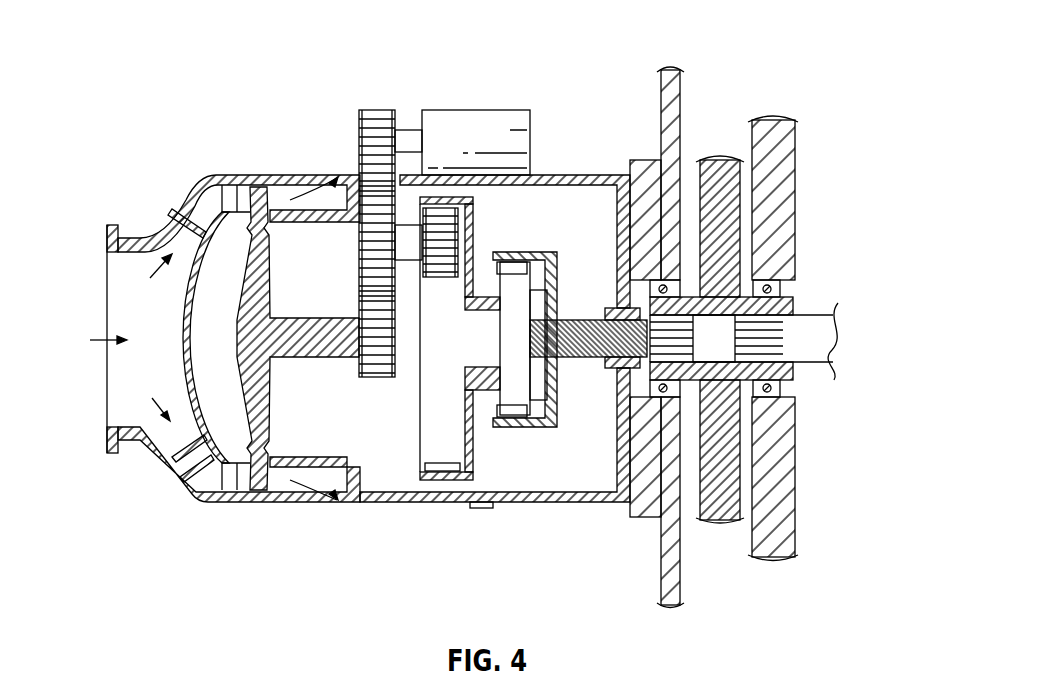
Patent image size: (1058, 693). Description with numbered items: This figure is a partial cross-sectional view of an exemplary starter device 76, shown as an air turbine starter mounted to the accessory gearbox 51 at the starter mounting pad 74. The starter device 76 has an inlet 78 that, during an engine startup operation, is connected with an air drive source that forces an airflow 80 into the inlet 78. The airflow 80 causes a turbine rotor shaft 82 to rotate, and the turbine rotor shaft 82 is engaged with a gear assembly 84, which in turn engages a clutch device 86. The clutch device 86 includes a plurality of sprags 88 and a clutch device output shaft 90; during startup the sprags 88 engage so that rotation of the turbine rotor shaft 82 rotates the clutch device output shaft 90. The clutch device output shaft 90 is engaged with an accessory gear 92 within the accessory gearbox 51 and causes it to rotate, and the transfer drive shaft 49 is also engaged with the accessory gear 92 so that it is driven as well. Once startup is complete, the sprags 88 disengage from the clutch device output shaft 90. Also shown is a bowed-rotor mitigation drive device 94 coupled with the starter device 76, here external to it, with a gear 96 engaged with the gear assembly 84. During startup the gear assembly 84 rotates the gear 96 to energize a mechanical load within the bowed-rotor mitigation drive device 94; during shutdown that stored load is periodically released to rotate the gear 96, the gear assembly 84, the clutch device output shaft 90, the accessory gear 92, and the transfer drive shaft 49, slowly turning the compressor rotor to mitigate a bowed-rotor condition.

The starter device 76 is at (232, 56).
The inlet 78 is at (124, 303).
The airflow 80 is at (100, 340).
The turbine rotor shaft 82 is at (257, 428).
The gear assembly 84 is at (406, 386).
The clutch device 86 is at (531, 436).
The sprags 88 is at (513, 414).
The clutch device output shaft 90 is at (598, 319).
The accessory gear 92 is at (730, 160).
The bowed-rotor mitigation drive device 94 is at (472, 127).
The gear 96 is at (358, 135).
The starter mounting pad 74 is at (648, 174).
The accessory gearbox 51 is at (672, 70).
The transfer drive shaft 49 is at (842, 325).